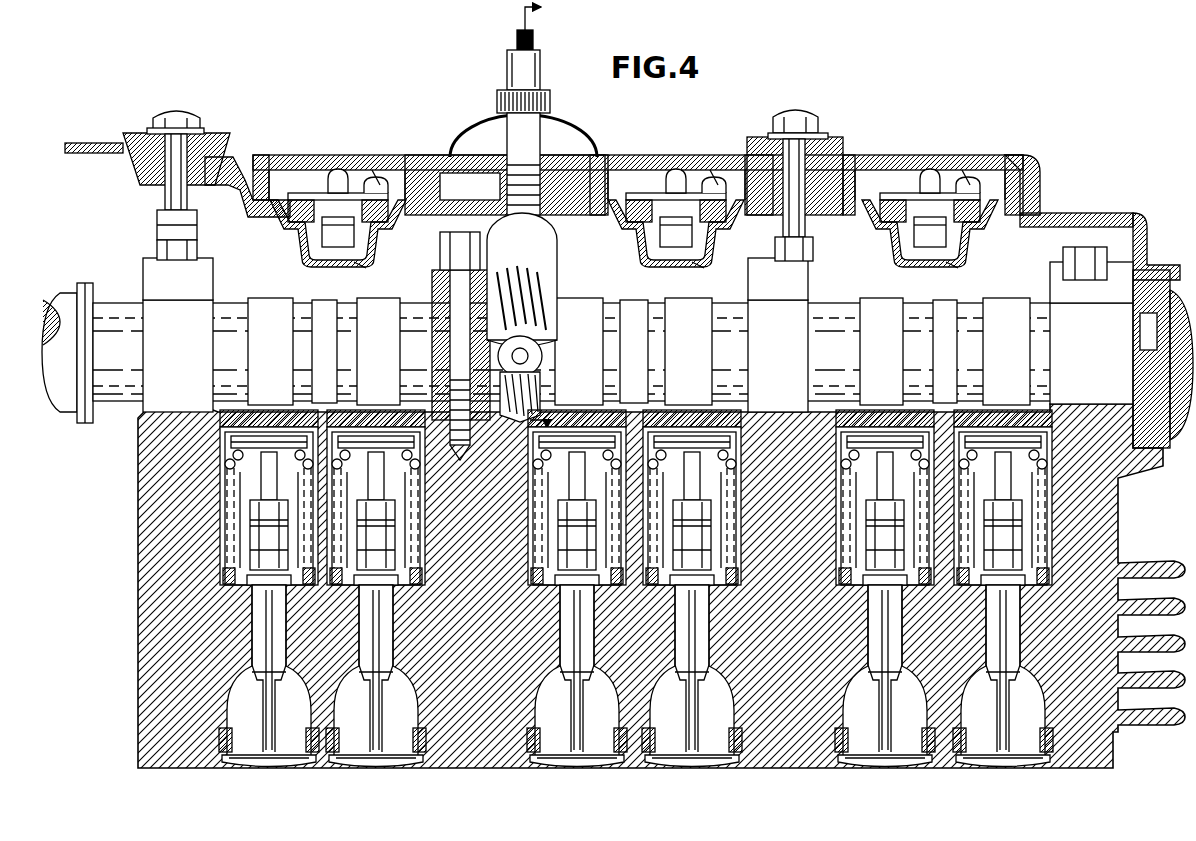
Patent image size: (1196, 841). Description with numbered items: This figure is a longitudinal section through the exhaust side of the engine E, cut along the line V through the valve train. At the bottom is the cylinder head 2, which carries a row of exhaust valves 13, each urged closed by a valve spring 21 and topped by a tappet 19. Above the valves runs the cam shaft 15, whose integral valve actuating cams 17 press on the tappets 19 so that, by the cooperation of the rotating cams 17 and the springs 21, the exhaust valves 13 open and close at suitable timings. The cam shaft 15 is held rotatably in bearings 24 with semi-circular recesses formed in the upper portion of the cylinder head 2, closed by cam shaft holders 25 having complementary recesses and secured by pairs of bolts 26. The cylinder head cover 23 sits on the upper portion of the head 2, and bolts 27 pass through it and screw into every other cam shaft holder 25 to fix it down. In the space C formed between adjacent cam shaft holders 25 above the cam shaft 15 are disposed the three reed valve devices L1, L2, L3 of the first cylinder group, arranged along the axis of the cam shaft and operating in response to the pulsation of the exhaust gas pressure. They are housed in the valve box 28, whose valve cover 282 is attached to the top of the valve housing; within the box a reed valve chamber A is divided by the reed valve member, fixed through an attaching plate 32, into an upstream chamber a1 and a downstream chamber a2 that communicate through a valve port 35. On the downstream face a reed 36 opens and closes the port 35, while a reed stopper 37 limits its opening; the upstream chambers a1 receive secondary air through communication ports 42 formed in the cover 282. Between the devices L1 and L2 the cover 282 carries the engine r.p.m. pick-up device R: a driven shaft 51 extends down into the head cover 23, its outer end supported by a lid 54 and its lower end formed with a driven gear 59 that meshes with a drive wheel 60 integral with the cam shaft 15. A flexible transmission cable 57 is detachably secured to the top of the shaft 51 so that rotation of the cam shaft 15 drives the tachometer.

The cylinder head 2 is at (490, 649).
The exhaust valve 13 is at (258, 697).
The cam shaft 15 is at (620, 304).
The valve actuating cam 17 is at (1014, 364).
The tappet 19 is at (221, 430).
The valve spring 21 is at (238, 527).
The cylinder head cover 23 is at (1073, 213).
The bearing 24 is at (158, 390).
The cam shaft holder 25 is at (213, 273).
The bolt 26 is at (160, 250).
The bolt 27 is at (174, 112).
The valve box 28 is at (411, 155).
The valve cover 282 is at (600, 156).
The attaching plate 32 is at (296, 206).
The valve port 35 is at (368, 206).
The reed 36 is at (305, 240).
The reed stopper 37 is at (338, 246).
The communication port 42 is at (338, 170).
The driven shaft 51 is at (540, 200).
The lid 54 is at (543, 137).
The flexible transmission cable 57 is at (517, 42).
The driven gear 59 is at (536, 312).
The drive wheel 60 is at (541, 382).
The reed valve chamber A is at (964, 182).
The space C is at (945, 301).
The engine E is at (1032, 142).
The engine r.p.m. pick-up device R is at (490, 238).
The section line V is at (547, 217).
The reed valve device L1 is at (282, 226).
The reed valve device L2 is at (619, 226).
The reed valve device L3 is at (870, 226).
The upstream chamber a1 is at (910, 196).
The downstream chamber a2 is at (662, 275).